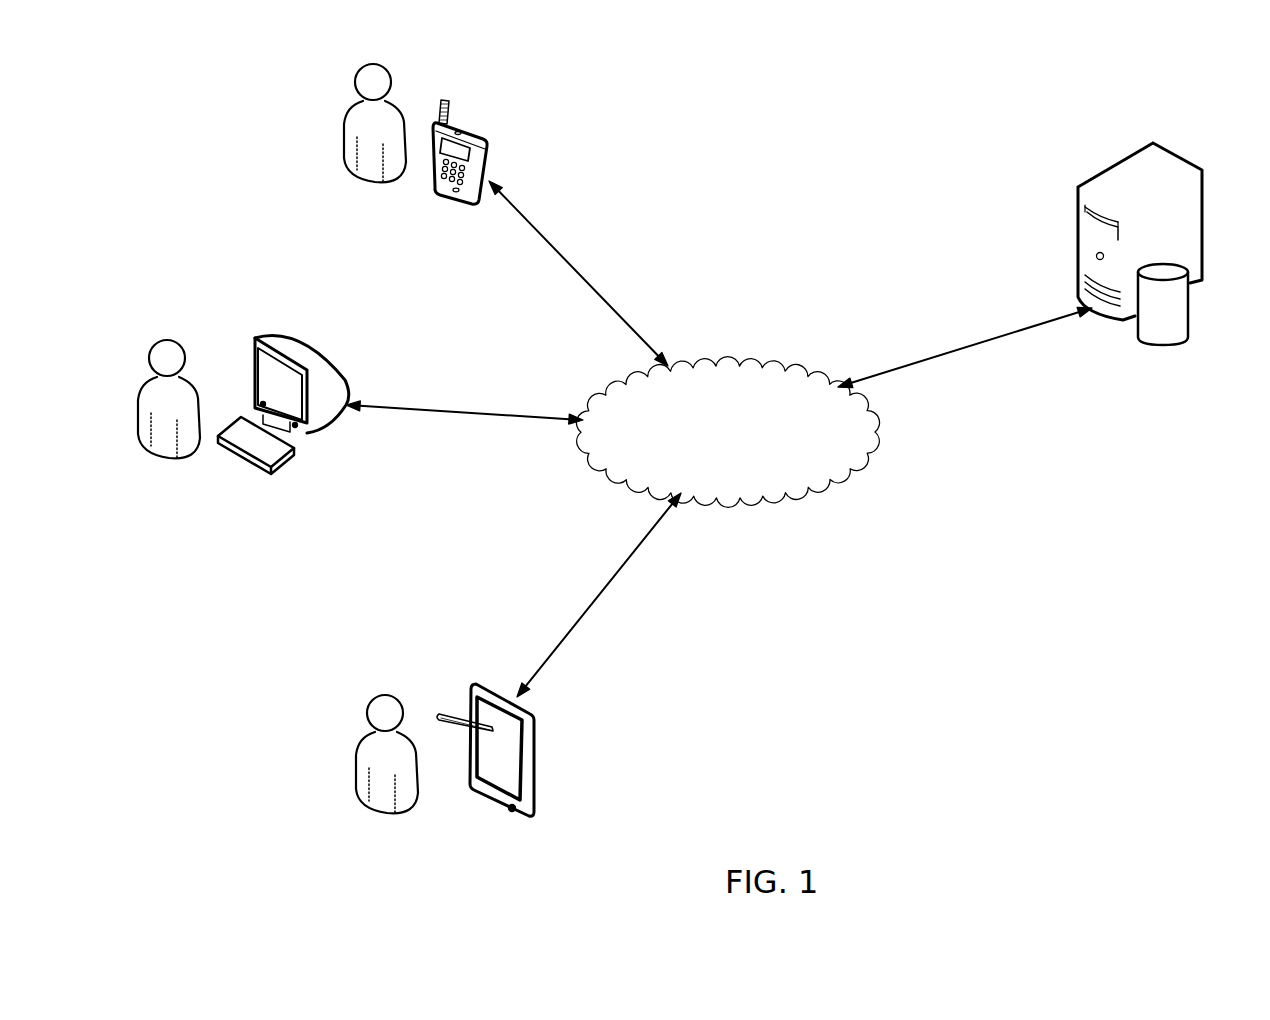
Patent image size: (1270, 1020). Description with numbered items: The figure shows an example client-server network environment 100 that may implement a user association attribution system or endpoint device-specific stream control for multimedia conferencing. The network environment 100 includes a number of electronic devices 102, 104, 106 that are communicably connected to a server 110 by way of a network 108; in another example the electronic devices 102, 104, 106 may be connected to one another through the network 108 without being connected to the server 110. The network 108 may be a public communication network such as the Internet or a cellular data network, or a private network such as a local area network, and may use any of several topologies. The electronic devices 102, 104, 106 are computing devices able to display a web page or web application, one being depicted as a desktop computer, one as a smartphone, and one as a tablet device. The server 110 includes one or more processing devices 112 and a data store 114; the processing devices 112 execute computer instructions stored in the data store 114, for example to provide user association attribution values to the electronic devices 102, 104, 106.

The network environment 100 is at (852, 110).
The electronic device 102 is at (471, 124).
The electronic device 104 is at (311, 347).
The electronic device 106 is at (480, 684).
The network 108 is at (723, 364).
The server 110 is at (1081, 342).
The processing devices 112 is at (1177, 153).
The data store 114 is at (1189, 320).